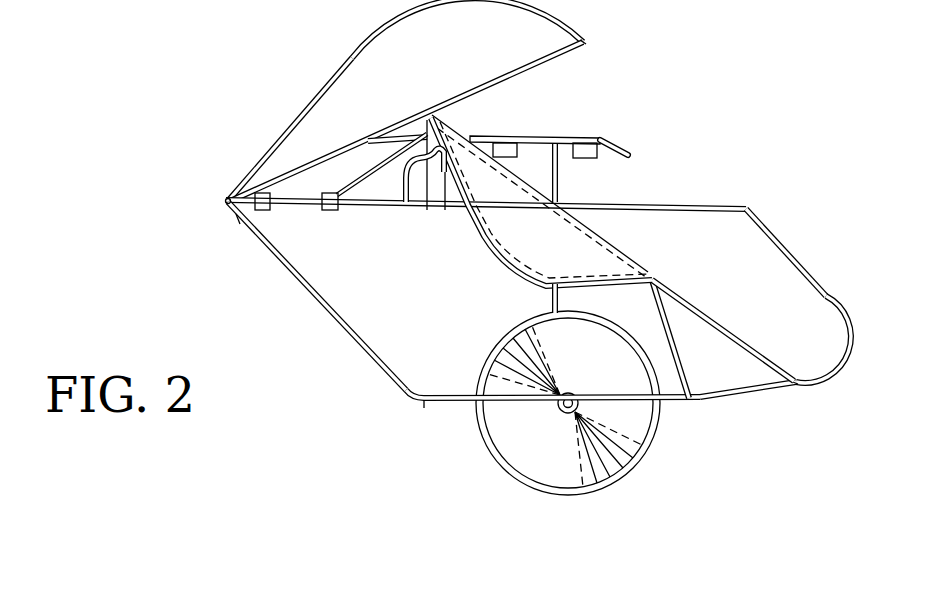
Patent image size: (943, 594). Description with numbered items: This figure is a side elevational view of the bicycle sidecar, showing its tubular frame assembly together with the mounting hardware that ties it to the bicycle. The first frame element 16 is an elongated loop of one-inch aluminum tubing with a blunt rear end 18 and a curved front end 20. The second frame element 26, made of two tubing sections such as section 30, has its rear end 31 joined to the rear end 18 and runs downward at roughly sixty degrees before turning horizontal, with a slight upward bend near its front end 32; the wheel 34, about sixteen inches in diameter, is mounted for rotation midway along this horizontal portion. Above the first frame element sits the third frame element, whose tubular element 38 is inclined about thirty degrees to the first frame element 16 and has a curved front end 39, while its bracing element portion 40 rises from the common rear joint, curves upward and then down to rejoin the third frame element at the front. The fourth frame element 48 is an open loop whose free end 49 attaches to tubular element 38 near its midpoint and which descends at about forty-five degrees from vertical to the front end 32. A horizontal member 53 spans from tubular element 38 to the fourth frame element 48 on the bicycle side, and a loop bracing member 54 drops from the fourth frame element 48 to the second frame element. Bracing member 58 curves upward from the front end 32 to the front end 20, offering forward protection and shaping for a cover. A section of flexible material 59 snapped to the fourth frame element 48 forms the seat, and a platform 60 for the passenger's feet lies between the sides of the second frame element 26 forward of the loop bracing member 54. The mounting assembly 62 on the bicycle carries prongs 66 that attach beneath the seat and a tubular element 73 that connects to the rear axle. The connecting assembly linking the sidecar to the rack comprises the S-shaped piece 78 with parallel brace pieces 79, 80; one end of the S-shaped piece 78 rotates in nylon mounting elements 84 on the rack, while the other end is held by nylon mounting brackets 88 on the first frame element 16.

The first frame element 16 is at (486, 185).
The rear end of first frame element 18 is at (198, 221).
The front end of first frame element 20 is at (786, 237).
The second frame element 26 is at (317, 296).
The elongated section of tubing 30 is at (533, 412).
The rear end of second frame element 31 is at (326, 341).
The front end of second frame element 32 is at (810, 401).
The wheel 34 is at (531, 247).
The tubular element 38 is at (419, 122).
The front end of third frame element 39 is at (614, 27).
The bracing element portion 40 is at (290, 129).
The fourth frame element 48 is at (723, 322).
The free end of fourth frame element loop 49 is at (431, 155).
The horizontal member 53 is at (397, 107).
The loop bracing member 54 is at (695, 359).
The bracing member 58 is at (843, 323).
The flexible material 59 is at (541, 215).
The platform 60 is at (748, 418).
The mounting assembly 62 is at (567, 101).
The prong 66 is at (645, 140).
The tubular element 73 is at (584, 172).
The S-shaped piece 78 is at (541, 197).
The brace piece 79 is at (381, 156).
The brace piece 80 is at (449, 190).
The nylon mounting element 84 is at (569, 126).
The nylon mounting bracket 88 is at (296, 225).